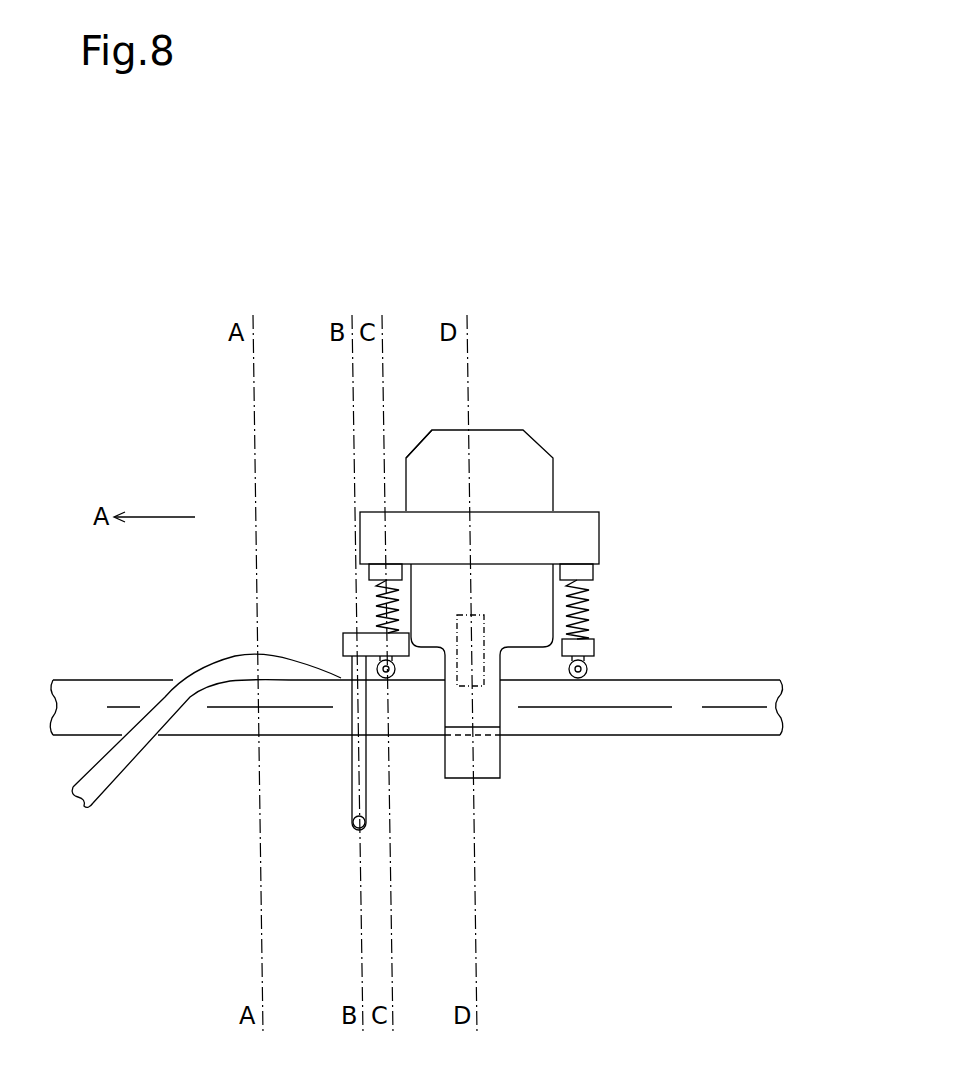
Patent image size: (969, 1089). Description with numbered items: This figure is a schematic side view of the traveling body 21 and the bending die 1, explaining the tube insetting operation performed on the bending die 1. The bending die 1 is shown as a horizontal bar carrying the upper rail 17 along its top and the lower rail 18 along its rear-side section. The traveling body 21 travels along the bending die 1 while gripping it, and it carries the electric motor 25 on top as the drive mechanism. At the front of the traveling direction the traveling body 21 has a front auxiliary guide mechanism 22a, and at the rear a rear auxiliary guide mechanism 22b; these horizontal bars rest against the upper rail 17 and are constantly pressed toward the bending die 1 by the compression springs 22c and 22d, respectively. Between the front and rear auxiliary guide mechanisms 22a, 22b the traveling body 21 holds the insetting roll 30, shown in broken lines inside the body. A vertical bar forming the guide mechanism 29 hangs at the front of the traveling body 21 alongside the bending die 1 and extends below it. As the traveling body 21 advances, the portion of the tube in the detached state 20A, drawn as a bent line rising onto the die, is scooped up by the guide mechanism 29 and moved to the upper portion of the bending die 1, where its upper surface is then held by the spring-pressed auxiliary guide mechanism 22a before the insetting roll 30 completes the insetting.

The bending die 1 is at (95, 723).
The upper rail 17 is at (660, 677).
The lower rail 18 is at (645, 720).
The state of the tube not yet insetted 20A is at (117, 773).
The traveling body 21 is at (512, 450).
The auxiliary guide mechanism 22a is at (396, 680).
The auxiliary guide mechanism 22b is at (573, 678).
The compression spring 22c is at (373, 595).
The compression spring 22d is at (593, 597).
The electric motor 25 is at (437, 473).
The guide mechanism 29 is at (350, 767).
The insetting roll 30 is at (478, 614).